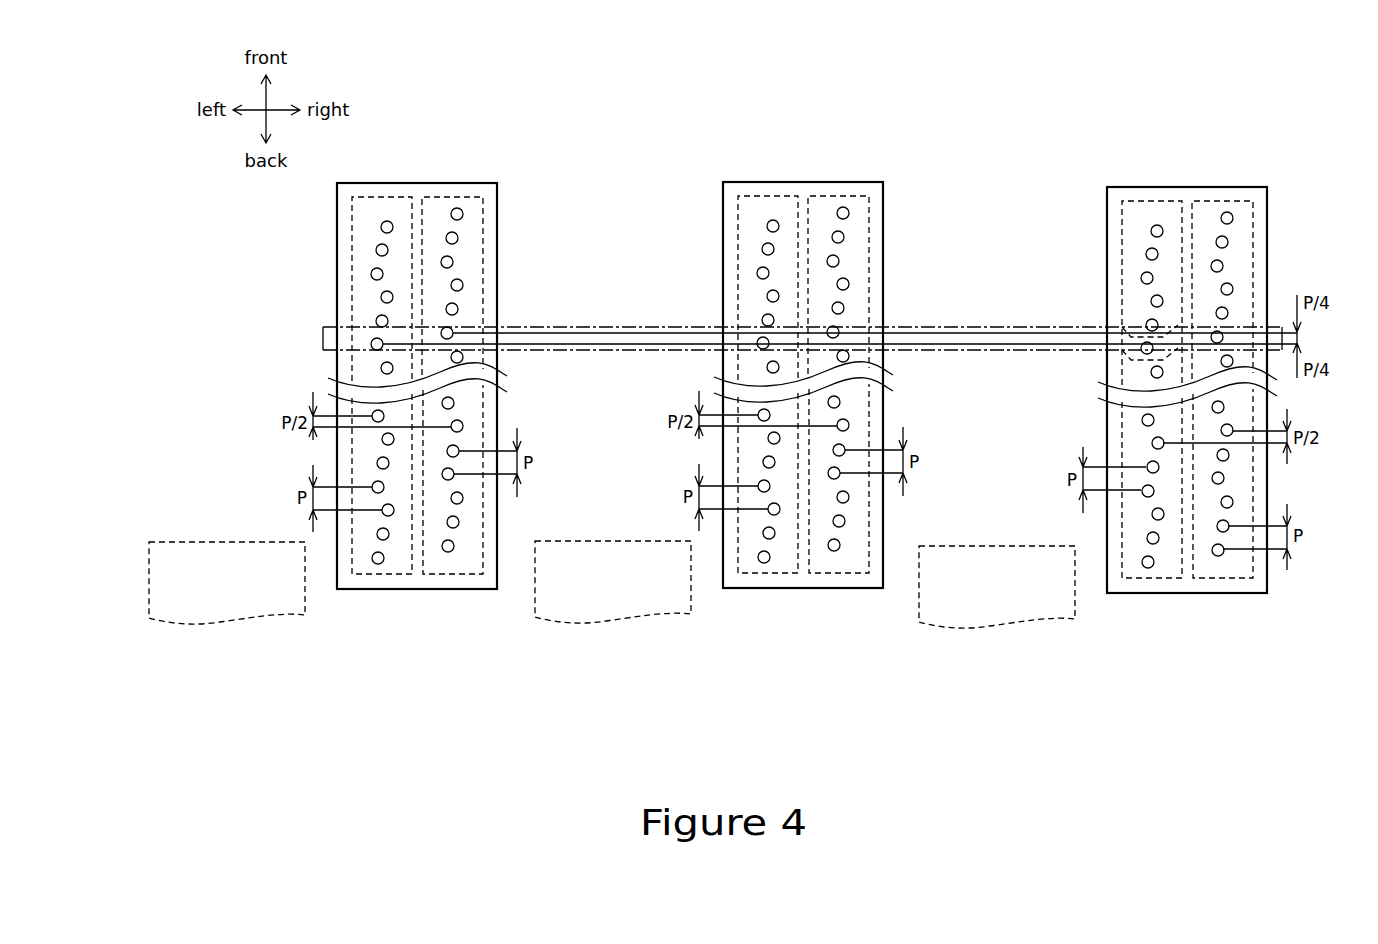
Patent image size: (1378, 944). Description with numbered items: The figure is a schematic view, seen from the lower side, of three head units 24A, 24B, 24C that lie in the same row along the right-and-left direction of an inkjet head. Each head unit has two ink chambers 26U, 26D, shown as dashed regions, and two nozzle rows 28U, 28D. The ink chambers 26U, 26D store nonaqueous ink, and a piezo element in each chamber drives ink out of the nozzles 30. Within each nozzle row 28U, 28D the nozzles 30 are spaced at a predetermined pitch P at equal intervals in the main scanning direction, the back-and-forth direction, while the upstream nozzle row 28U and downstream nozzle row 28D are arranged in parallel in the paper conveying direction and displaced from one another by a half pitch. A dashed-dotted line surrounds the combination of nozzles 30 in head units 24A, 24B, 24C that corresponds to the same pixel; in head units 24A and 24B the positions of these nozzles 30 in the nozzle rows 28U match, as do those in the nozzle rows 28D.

The head unit 24A is at (417, 183).
The head unit 24B is at (709, 357).
The head unit 24C is at (1093, 362).
The ink chamber 26U is at (382, 197).
The ink chamber 26D is at (452, 197).
The nozzle row 28U is at (381, 579).
The nozzle row 28D is at (451, 573).
The nozzle 30 is at (376, 250).